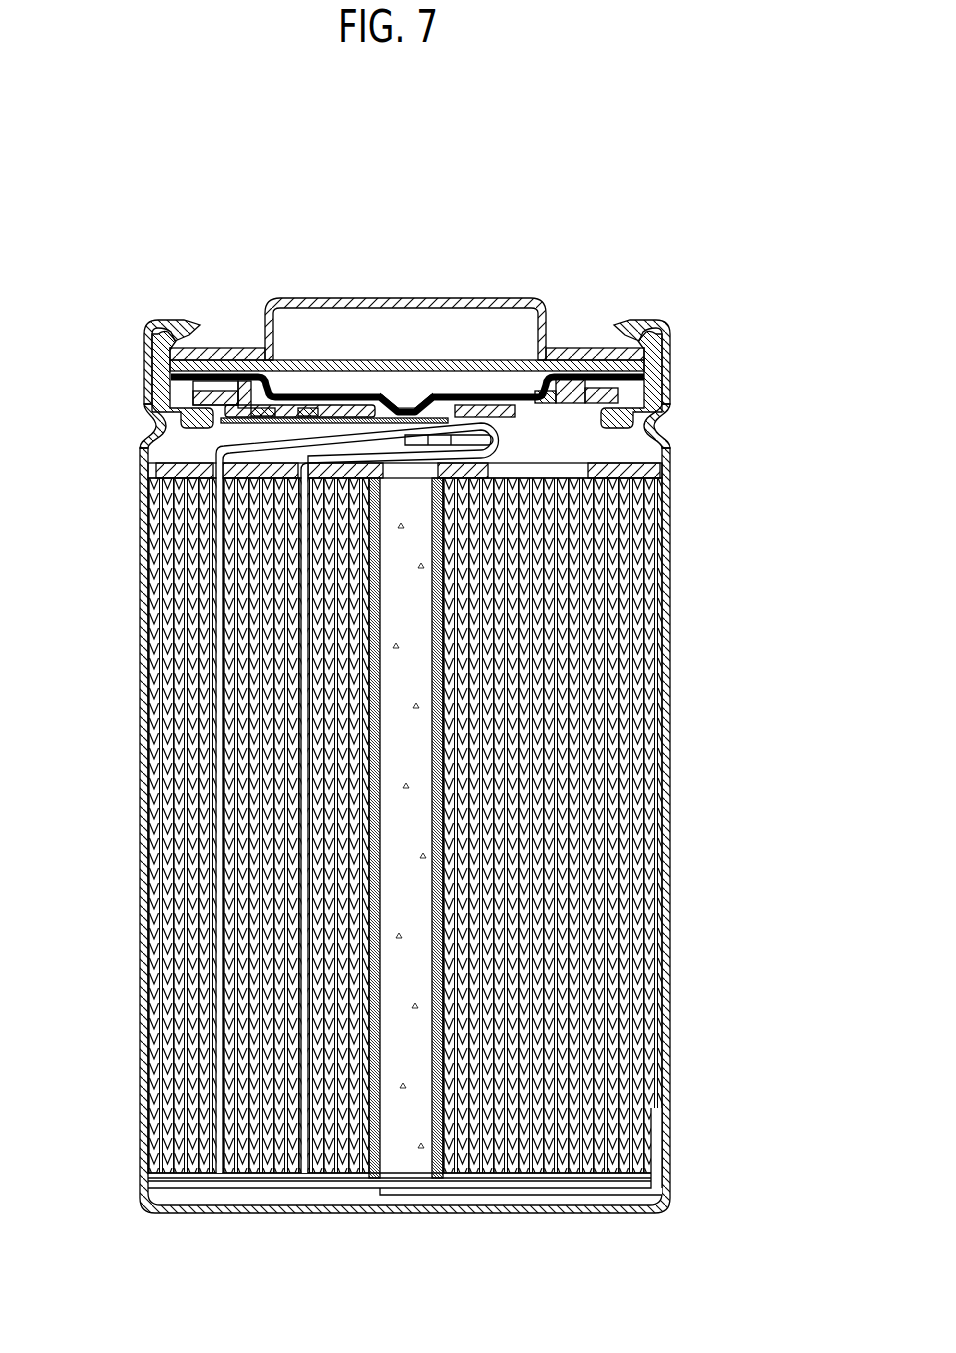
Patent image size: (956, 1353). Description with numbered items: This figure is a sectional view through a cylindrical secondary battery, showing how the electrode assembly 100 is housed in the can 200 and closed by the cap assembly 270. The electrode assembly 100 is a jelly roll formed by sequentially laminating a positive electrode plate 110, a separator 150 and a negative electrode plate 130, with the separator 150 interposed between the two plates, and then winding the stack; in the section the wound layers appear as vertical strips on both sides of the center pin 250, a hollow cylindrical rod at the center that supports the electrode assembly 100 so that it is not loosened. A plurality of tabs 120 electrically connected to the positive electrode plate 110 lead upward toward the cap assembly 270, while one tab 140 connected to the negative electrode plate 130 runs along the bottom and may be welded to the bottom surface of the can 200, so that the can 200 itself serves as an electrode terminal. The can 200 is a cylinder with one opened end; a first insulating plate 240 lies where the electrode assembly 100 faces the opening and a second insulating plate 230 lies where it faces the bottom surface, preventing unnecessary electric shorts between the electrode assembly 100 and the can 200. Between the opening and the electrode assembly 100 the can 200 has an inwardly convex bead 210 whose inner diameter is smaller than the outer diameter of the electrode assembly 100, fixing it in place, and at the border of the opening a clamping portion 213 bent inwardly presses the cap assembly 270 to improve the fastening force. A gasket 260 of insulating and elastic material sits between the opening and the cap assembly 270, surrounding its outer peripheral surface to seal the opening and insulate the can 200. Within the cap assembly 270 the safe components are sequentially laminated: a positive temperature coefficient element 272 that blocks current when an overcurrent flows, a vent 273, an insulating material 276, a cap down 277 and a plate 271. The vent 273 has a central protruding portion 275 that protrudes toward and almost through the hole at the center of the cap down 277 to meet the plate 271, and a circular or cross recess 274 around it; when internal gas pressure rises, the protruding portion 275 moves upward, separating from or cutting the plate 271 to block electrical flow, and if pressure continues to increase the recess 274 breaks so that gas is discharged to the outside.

The electrode assembly 100 is at (765, 405).
The positive electrode plate 110 is at (605, 640).
The tabs 120 is at (503, 428).
The negative electrode plate 130 is at (622, 576).
The tab 140 is at (575, 1196).
The separator 150 is at (612, 615).
The can 200 is at (136, 546).
The bead 210 is at (148, 418).
The clamping portion 213 is at (150, 320).
The second insulating plate 230 is at (270, 1176).
The first insulating plate 240 is at (165, 458).
The center pin 250 is at (385, 635).
The gasket 260 is at (658, 344).
The cap assembly 270 is at (615, 212).
The plate 271 is at (498, 380).
The positive temperature coefficient element 272 is at (572, 338).
The vent 273 is at (212, 365).
The recess 274 is at (547, 323).
The protruding portion 275 is at (394, 399).
The insulating material 276 is at (223, 350).
The cap down 277 is at (368, 395).